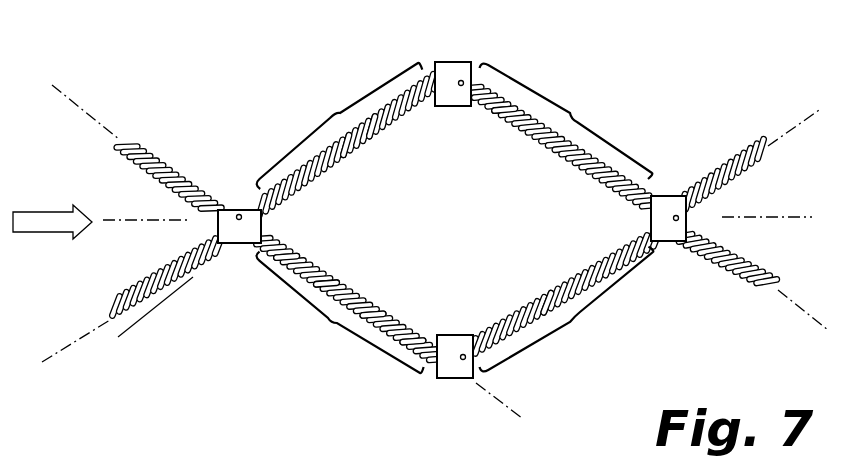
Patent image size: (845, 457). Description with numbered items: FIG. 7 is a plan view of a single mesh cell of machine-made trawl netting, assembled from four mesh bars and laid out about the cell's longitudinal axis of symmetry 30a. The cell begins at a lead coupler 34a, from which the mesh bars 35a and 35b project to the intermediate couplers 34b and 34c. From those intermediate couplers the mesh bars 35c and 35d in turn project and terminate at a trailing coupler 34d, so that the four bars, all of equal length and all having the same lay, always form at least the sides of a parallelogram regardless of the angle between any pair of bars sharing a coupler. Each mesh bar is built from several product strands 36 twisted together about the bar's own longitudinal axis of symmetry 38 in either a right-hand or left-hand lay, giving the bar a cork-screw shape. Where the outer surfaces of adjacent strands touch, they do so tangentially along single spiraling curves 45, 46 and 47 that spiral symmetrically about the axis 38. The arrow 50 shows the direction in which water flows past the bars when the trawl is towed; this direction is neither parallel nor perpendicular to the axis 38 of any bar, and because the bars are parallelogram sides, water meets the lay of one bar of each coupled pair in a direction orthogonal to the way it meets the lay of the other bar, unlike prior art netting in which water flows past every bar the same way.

The longitudinal axis of symmetry 30a is at (137, 217).
The lead coupler 34a is at (240, 209).
The intermediate coupler 34b is at (452, 62).
The intermediate coupler 34c is at (457, 379).
The trailing coupler 34d is at (672, 242).
The mesh bar 35a is at (333, 322).
The mesh bar 35b is at (331, 117).
The mesh bar 35c is at (572, 114).
The mesh bar 35d is at (575, 323).
The product strand 36 is at (368, 139).
The longitudinal axis of symmetry 38 is at (80, 106).
The spiraling curve 45 is at (372, 306).
The spiraling curve 46 is at (416, 335).
The spiraling curve 47 is at (545, 298).
The arrow 50 is at (52, 181).